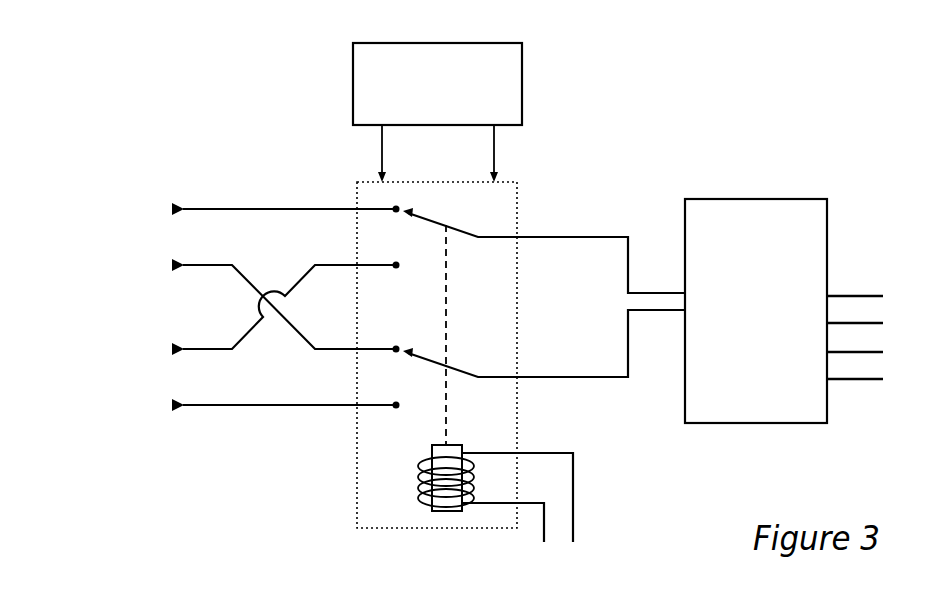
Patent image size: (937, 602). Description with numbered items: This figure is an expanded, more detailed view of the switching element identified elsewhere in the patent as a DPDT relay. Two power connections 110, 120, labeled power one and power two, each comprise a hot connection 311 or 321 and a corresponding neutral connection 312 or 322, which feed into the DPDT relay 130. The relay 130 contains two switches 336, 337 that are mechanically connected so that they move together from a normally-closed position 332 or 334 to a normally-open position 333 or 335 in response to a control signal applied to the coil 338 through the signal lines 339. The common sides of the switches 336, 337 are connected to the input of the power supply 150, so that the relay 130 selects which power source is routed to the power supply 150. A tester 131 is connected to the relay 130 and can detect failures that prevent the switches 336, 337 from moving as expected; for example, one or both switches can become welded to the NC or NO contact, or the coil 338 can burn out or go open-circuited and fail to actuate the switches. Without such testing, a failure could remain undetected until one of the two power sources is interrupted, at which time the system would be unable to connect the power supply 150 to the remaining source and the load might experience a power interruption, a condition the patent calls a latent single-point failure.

The tester 131 is at (437, 102).
The DPDT relay 130 is at (437, 370).
The power connection 110 is at (92, 238).
The power connection 120 is at (92, 377).
The hot connection 311 is at (284, 201).
The neutral connection 312 is at (284, 296).
The hot connection 321 is at (284, 310).
The neutral connection 322 is at (284, 397).
The normally-closed position 332 is at (361, 199).
The normally-open position 333 is at (361, 264).
The normally-closed position 334 is at (361, 340).
The normally-open position 335 is at (361, 404).
The switch 336 is at (544, 249).
The switch 337 is at (544, 343).
The coil 338 is at (427, 478).
The signal lines 339 is at (518, 511).
The power supply 150 is at (784, 325).